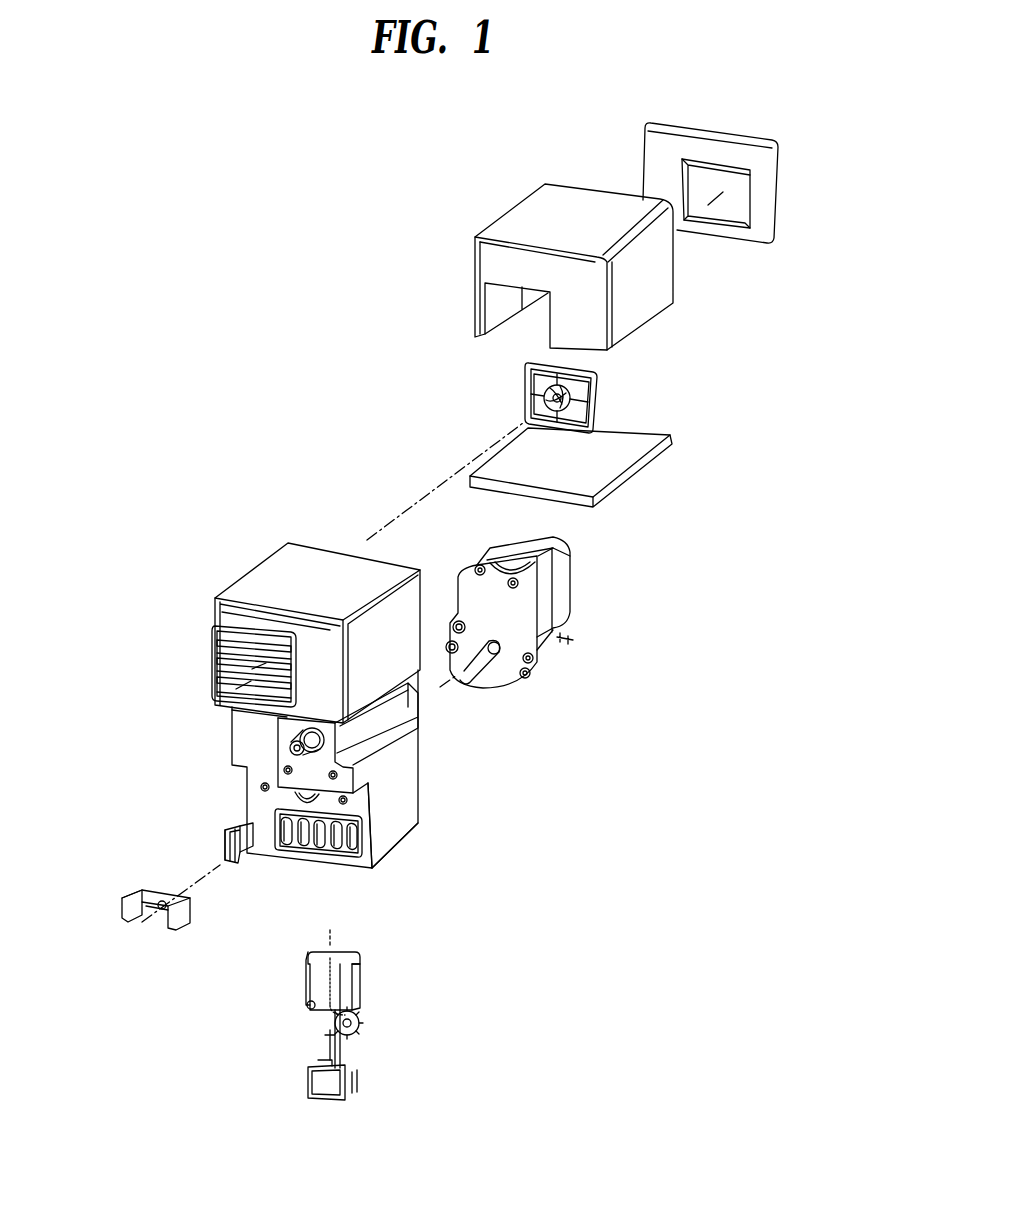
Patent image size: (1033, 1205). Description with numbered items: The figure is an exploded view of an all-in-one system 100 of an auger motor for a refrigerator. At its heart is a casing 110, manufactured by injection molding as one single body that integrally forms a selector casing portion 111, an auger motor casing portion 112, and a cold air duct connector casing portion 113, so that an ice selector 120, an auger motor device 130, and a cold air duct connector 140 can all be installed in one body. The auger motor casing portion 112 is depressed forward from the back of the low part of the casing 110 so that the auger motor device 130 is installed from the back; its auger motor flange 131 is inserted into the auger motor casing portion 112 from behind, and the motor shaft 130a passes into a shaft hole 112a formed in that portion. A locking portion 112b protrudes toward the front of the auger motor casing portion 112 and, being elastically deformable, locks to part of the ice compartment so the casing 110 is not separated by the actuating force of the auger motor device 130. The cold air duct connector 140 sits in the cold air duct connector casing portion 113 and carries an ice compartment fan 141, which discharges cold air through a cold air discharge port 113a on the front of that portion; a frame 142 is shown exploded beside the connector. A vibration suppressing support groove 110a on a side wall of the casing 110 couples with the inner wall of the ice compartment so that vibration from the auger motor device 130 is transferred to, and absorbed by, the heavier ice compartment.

The system of an auger motor for a refrigerator 100 is at (310, 253).
The casing 110 is at (427, 802).
The vibration suppressing support groove 110a is at (385, 712).
The selector casing portion 111 is at (283, 800).
The auger motor casing portion 112 is at (355, 813).
The shaft hole 112a is at (303, 782).
The locking portion 112b is at (238, 863).
The cold air duct connector casing portion 113 is at (253, 618).
The cold air discharge port 113a is at (227, 688).
The ice selector 120 is at (348, 1072).
The auger motor device 130 is at (563, 587).
The motor shaft 130a is at (483, 663).
The auger motor flange 131 is at (182, 920).
The cold air duct connector 140 is at (648, 302).
The ice compartment fan 141 is at (597, 393).
The front frame 142 is at (755, 235).